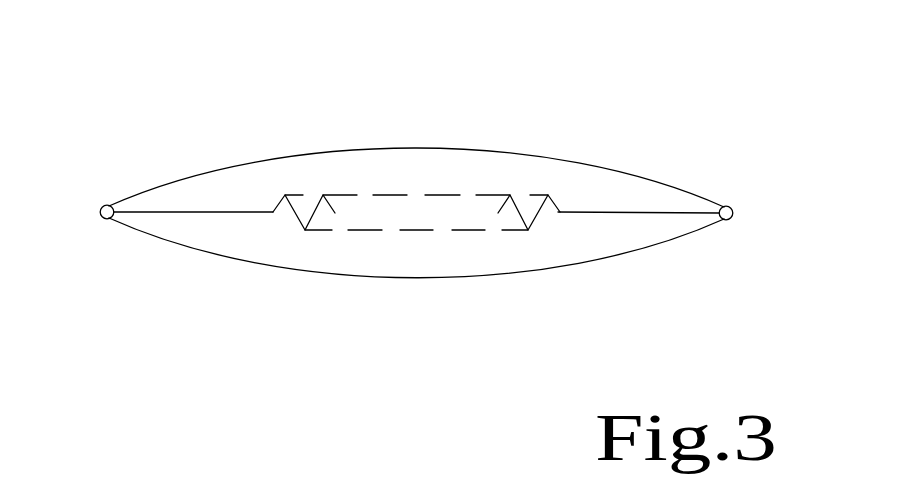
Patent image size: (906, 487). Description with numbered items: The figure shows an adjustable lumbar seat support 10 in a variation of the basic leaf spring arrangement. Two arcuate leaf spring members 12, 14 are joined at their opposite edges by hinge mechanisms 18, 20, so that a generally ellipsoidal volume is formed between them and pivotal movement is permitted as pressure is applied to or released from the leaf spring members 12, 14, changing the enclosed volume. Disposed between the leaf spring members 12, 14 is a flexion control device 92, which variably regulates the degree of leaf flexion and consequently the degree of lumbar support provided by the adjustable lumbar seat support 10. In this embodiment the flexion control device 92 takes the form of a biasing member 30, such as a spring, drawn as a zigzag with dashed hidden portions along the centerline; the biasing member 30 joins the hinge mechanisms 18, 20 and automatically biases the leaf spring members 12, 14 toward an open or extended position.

The adjustable lumbar seat support 10 is at (385, 120).
The leaf spring member 12 is at (557, 160).
The leaf spring member 14 is at (210, 252).
The hinge mechanism 18 is at (105, 205).
The hinge mechanism 20 is at (732, 208).
The biasing member 30 is at (537, 217).
The flexion control device 92 is at (407, 237).